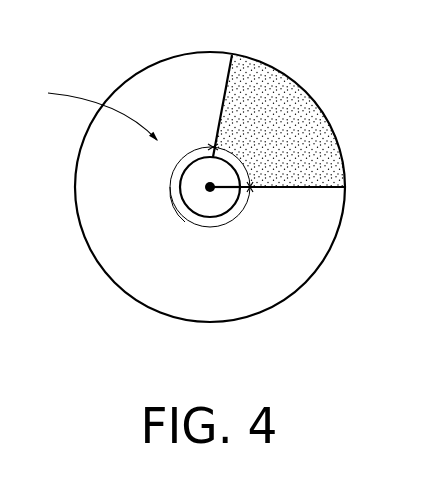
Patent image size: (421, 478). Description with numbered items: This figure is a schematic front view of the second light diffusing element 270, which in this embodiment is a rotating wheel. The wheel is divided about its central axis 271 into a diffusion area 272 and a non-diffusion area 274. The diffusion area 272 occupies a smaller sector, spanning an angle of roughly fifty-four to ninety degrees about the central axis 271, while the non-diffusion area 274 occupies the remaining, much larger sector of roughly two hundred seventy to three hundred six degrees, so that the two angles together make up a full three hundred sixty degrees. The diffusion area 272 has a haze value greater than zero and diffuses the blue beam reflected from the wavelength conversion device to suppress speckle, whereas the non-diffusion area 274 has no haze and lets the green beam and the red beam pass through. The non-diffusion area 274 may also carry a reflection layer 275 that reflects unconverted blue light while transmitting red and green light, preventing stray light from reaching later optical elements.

The second light diffusing element 270 is at (206, 189).
The central axis 271 is at (210, 187).
The diffusion area 272 is at (268, 102).
The non-diffusion area 274 is at (152, 103).
The reflection layer 275 is at (86, 112).